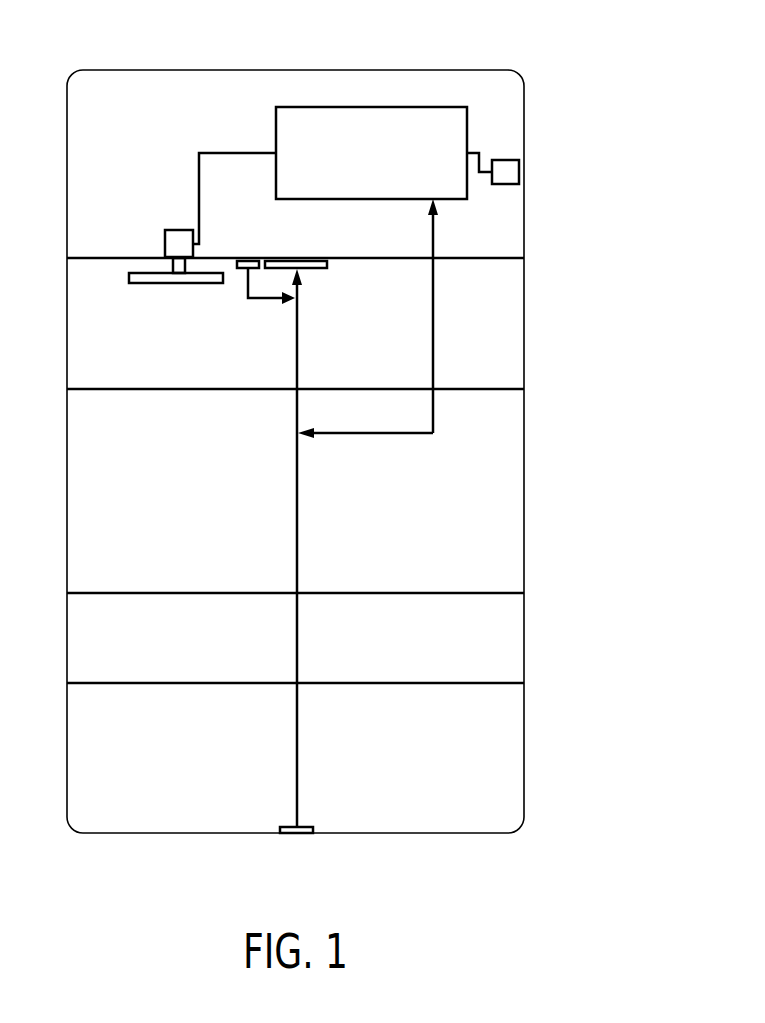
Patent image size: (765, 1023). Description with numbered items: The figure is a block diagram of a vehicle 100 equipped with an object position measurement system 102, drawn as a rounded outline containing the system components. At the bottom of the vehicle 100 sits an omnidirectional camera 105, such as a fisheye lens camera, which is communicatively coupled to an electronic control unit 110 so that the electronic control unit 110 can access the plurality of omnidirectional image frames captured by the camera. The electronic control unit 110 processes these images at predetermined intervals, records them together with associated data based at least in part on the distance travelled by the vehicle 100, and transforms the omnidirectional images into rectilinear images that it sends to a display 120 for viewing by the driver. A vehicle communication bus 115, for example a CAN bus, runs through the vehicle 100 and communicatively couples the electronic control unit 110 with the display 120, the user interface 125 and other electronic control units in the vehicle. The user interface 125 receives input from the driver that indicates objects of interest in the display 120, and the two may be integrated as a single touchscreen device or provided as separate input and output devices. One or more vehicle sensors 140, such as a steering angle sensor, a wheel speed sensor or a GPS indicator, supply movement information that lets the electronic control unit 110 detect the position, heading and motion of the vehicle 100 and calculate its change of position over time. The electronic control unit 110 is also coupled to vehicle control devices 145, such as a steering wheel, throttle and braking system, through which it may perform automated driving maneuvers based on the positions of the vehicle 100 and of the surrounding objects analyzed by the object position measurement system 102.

The vehicle 100 is at (433, 70).
The object position measurement system 102 is at (564, 95).
The omnidirectional camera 105 is at (276, 831).
The electronic control unit 110 is at (345, 107).
The vehicle communication bus 115 is at (297, 515).
The display 120 is at (327, 263).
The user interface 125 is at (248, 261).
The vehicle sensors 140 is at (519, 172).
The vehicle control devices 145 is at (173, 230).